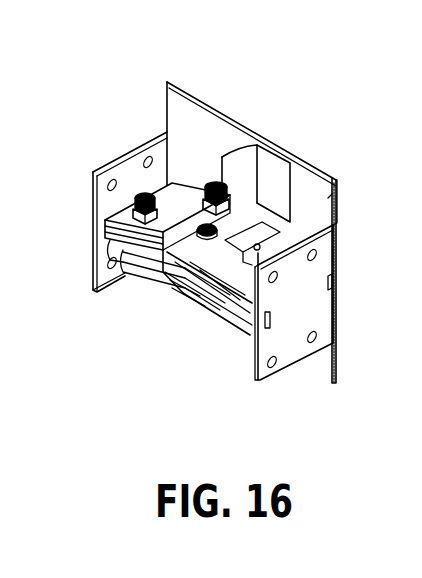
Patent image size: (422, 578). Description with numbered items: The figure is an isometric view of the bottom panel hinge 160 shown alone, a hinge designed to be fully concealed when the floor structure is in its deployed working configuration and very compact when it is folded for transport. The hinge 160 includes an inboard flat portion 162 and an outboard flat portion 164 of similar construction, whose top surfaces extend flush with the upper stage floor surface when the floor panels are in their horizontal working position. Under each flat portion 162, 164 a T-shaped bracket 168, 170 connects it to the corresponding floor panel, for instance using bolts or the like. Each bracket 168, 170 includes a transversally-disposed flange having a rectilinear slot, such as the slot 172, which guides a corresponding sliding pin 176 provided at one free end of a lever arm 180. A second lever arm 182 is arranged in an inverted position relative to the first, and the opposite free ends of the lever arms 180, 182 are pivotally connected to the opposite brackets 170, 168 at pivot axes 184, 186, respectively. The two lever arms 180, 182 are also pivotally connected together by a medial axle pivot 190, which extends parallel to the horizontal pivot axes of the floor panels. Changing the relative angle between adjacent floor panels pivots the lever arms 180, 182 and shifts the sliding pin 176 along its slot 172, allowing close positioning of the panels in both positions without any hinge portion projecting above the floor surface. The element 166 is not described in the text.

The bottom panel hinge 160 is at (364, 138).
The inboard flat portion 162 is at (183, 102).
The outboard flat portion 164 is at (331, 194).
The plate edge 166 is at (377, 226).
The T-shaped bracket 168 is at (130, 167).
The T-shaped bracket 170 is at (331, 313).
The rectilinear slot 172 is at (190, 190).
The sliding pin 176 is at (135, 203).
The lever arm 180 is at (151, 272).
The lever arm 182 is at (245, 292).
The pivot axis 184 is at (279, 175).
The pivot axis 186 is at (291, 235).
The medial axle pivot 190 is at (183, 291).